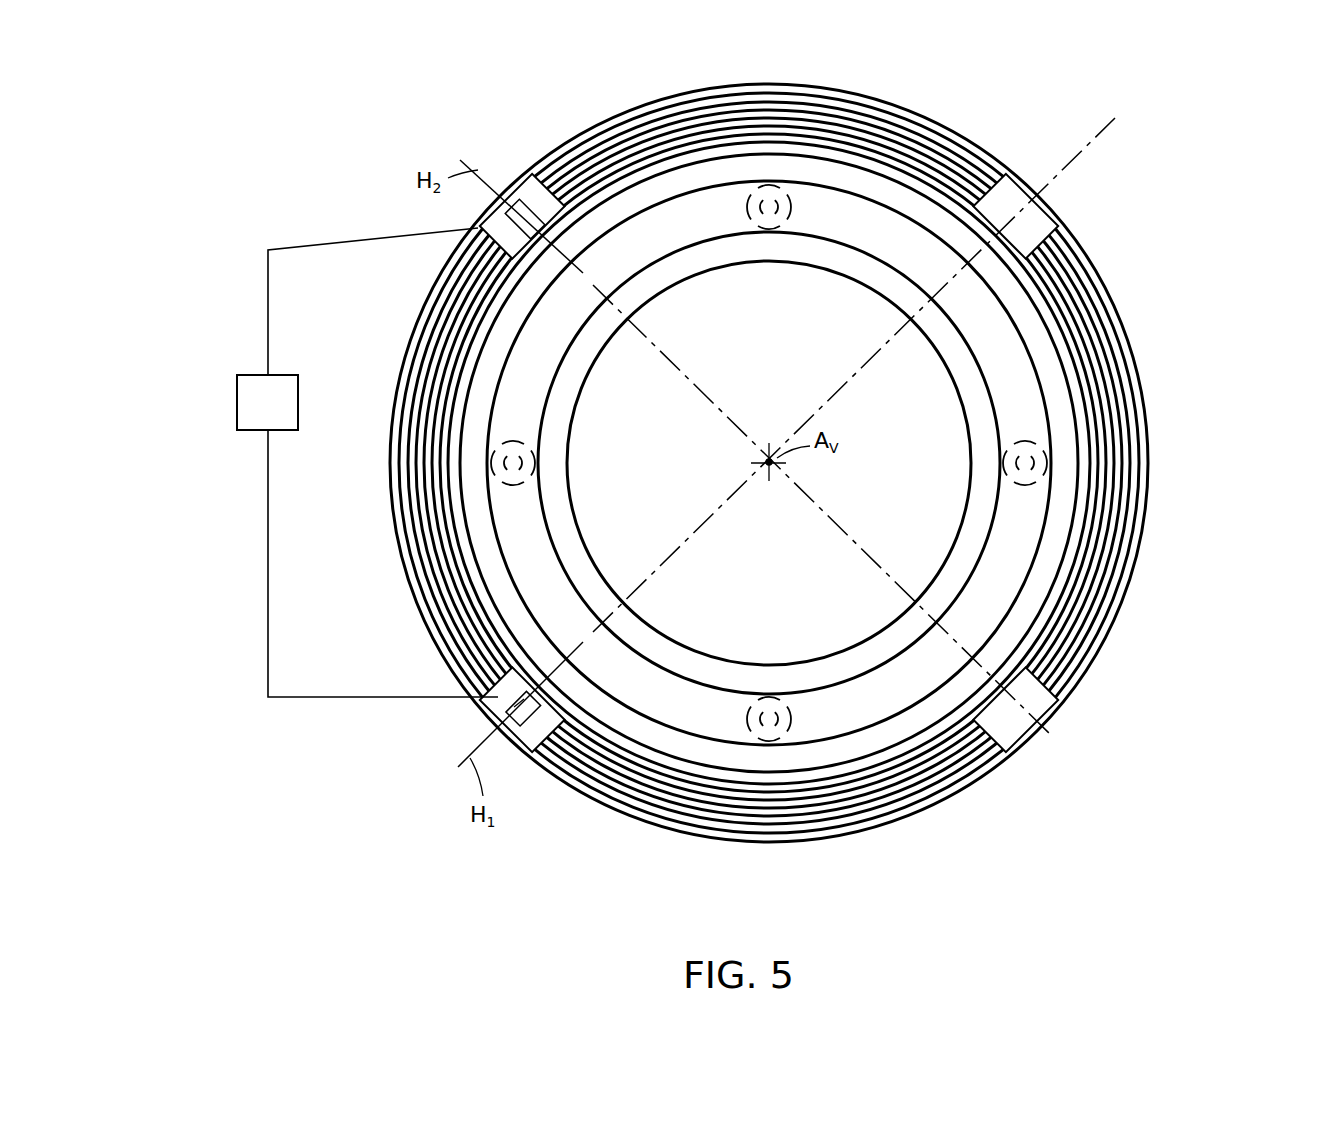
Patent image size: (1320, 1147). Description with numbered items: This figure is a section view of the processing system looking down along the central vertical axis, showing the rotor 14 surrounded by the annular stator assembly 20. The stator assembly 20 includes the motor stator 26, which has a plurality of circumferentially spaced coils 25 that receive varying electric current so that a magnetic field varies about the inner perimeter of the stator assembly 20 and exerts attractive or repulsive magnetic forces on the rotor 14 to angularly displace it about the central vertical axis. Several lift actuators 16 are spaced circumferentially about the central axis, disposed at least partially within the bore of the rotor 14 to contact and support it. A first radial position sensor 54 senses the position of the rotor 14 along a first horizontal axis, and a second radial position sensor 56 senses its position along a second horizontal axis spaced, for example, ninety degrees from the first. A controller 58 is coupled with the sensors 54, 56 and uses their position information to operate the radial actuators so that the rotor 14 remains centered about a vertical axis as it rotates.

The rotor 14 is at (998, 632).
The lift actuator 16 is at (1048, 466).
The annular stator assembly 20 is at (770, 467).
The coils 25 is at (928, 120).
The motor stator 26 is at (1150, 309).
The first radial position sensor 54 is at (508, 703).
The second radial position sensor 56 is at (527, 214).
The controller 58 is at (236, 388).